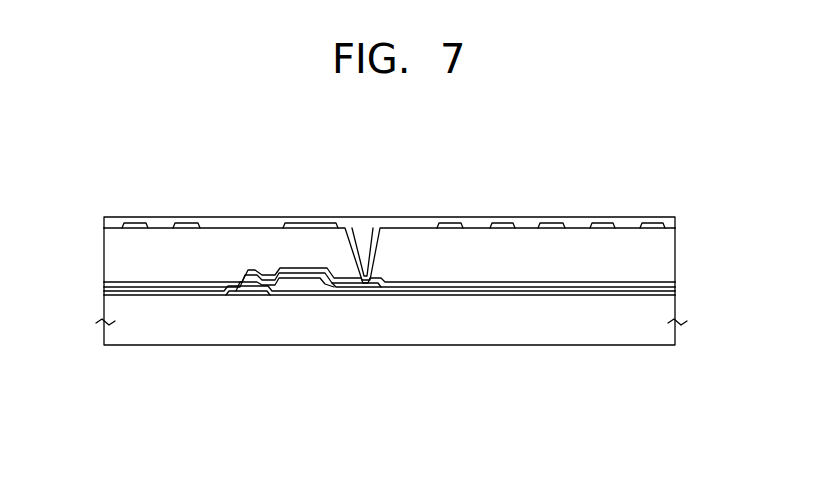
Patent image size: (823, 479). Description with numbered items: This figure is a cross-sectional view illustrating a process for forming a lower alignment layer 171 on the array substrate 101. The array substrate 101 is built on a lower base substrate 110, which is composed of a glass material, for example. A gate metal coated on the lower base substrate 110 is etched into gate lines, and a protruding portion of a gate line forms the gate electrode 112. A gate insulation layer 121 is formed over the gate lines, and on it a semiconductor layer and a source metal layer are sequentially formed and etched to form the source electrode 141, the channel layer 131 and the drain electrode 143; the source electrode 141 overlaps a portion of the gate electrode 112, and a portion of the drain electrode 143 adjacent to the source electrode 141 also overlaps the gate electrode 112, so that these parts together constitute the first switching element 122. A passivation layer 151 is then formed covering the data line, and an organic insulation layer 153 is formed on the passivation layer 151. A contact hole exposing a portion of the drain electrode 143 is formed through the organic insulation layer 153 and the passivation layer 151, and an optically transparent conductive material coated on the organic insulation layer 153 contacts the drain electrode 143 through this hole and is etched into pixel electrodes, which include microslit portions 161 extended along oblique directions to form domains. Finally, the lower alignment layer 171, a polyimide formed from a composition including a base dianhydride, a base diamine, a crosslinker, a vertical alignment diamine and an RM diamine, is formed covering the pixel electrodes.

The array substrate 101 is at (88, 222).
The lower base substrate 110 is at (660, 309).
The gate electrode 112 is at (302, 290).
The gate insulation layer 121 is at (228, 294).
The first switching element 122 is at (408, 397).
The channel layer 131 is at (327, 290).
The source electrode 141 is at (268, 292).
The drain electrode 143 is at (368, 290).
The passivation layer 151 is at (478, 284).
The organic insulation layer 153 is at (660, 275).
The microslit portion 161 is at (662, 226).
The lower alignment layer 171 is at (567, 229).